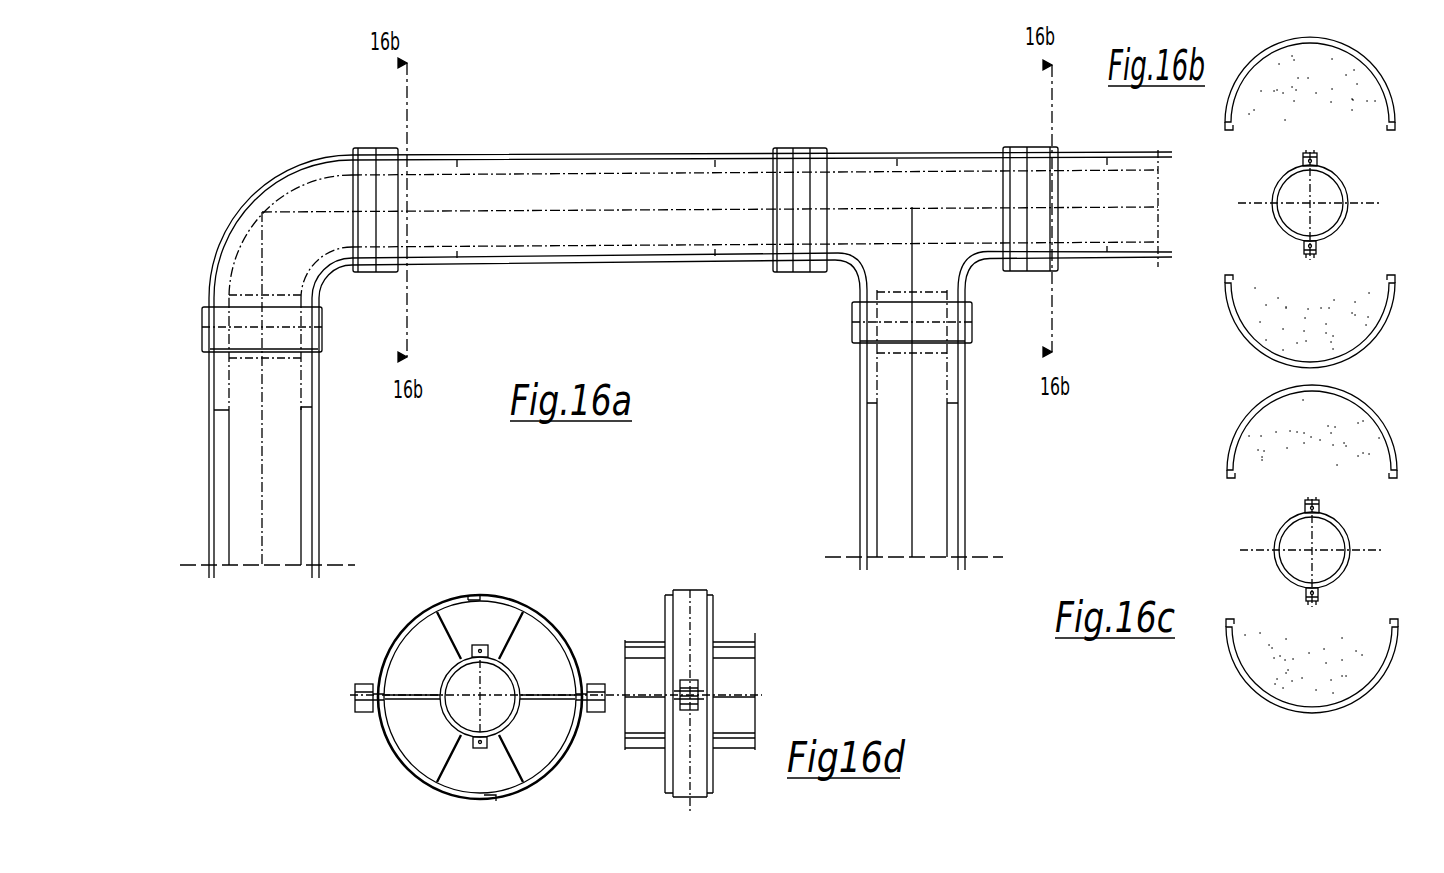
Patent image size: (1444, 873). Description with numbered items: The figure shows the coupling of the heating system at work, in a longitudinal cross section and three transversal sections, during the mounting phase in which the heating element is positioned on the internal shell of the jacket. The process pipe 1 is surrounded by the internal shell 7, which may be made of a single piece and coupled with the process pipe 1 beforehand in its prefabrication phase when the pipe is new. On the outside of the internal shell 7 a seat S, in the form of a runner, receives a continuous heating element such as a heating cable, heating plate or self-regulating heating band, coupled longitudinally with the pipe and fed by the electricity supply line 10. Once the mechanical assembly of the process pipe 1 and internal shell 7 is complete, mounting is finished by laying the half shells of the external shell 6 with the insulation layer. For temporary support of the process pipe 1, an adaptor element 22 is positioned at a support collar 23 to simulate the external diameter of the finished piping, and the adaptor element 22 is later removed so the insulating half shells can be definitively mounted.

In FIG. 16A, the process pipe 1 is at (445, 212).
In FIG. 16B, the process pipe 1 is at (1342, 187).
In FIG. 16C, the process pipe 1 is at (1344, 534).
In FIG. 16A, the internal shell 7 is at (524, 167).
In FIG. 16B, the internal shell 7 is at (1283, 183).
In FIG. 16C, the internal shell 7 is at (1285, 530).
In FIG. 16D, the internal shell 7 is at (633, 737).
In FIG. 16A, the electricity supply line 10 is at (243, 208).
In FIG. 16B, the external shell 6 is at (1249, 76).
In FIG. 16C, the external shell 6 is at (1251, 420).
In FIG. 16B, the seat S is at (1308, 150).
In FIG. 16C, the seat S is at (1310, 497).
In FIG. 16D, the adaptor element 22 is at (400, 754).
In FIG. 16D, the support collar 23 is at (398, 632).